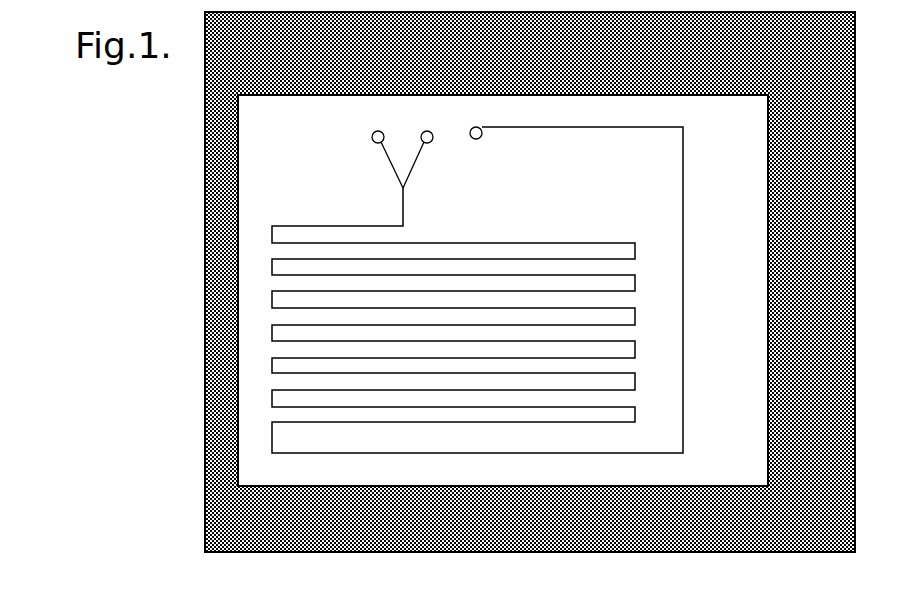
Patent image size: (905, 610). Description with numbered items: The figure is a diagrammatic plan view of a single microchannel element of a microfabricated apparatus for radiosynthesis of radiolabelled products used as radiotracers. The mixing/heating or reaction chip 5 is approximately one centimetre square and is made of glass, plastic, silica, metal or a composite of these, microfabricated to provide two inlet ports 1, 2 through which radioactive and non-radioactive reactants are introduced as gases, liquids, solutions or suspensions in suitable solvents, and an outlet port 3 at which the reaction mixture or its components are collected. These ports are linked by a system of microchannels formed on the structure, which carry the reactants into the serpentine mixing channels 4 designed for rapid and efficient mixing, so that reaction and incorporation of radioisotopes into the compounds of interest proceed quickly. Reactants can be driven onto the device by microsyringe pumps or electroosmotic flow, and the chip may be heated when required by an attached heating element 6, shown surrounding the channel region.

The inlet port 1 is at (372, 137).
The inlet port 2 is at (430, 142).
The outlet port 3 is at (480, 139).
The mixing channels 4 is at (270, 367).
The reaction chip 5 is at (350, 472).
The heating element 6 is at (447, 532).